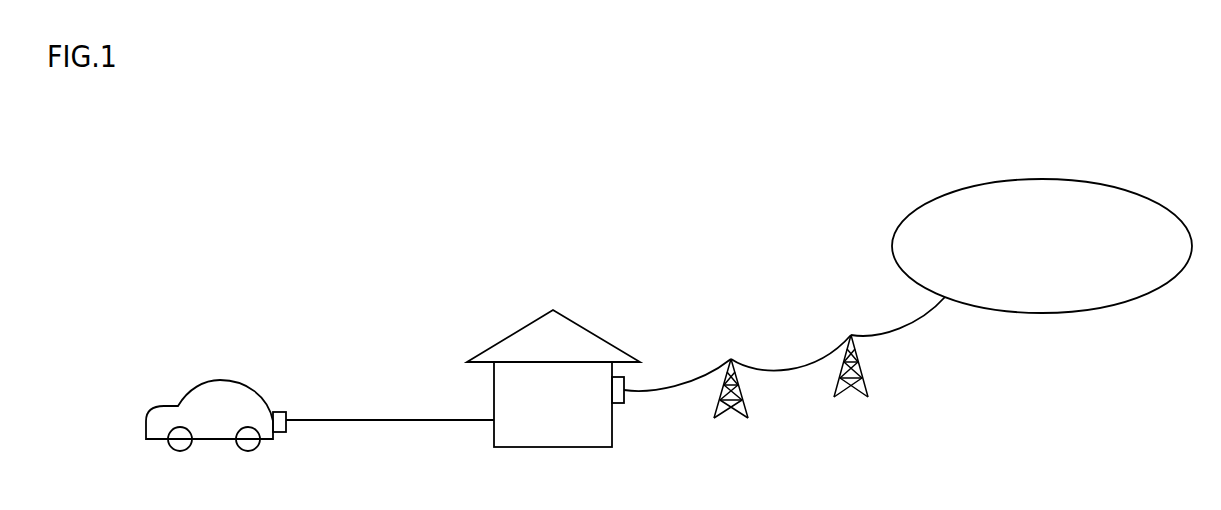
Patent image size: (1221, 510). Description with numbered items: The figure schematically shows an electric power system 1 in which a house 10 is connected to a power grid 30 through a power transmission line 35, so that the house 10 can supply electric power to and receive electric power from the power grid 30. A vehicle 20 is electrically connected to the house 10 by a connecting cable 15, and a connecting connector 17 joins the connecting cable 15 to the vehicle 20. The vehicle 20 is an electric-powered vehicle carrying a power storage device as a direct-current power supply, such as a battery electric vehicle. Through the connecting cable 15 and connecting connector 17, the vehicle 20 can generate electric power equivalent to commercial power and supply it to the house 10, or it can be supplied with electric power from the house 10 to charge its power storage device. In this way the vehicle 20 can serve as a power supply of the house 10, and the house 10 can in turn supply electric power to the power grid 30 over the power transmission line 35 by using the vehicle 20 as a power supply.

The electric power system 1 is at (235, 123).
The house 10 is at (515, 331).
The connecting cable 15 is at (353, 419).
The connecting connector 17 is at (280, 433).
The vehicle 20 is at (222, 381).
The power grid 30 is at (1090, 182).
The power transmission line 35 is at (787, 363).